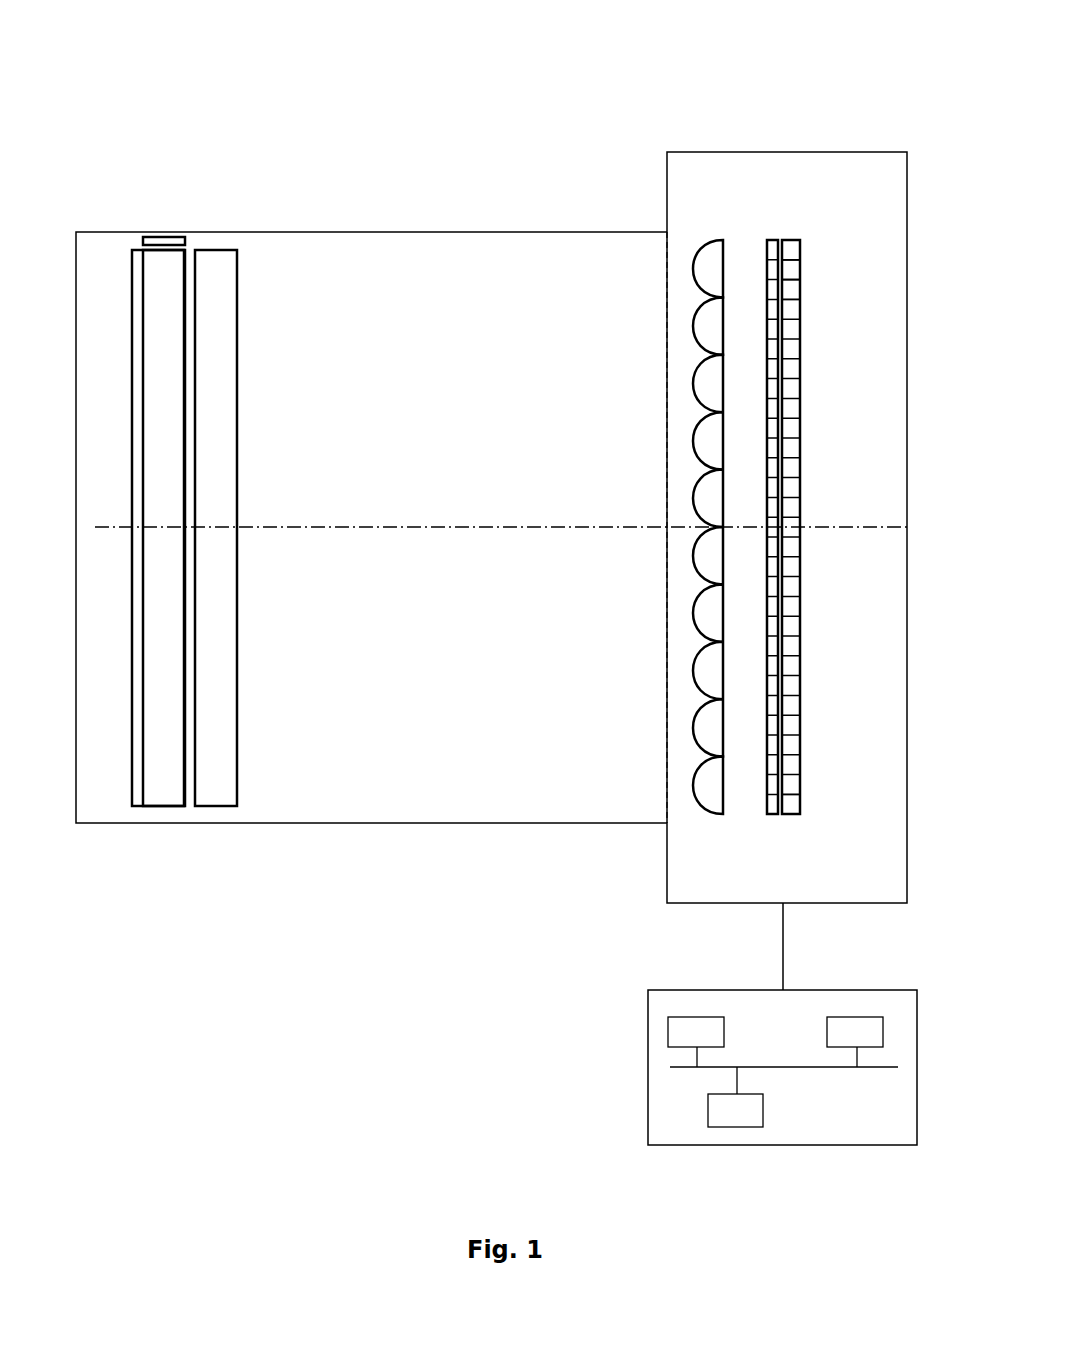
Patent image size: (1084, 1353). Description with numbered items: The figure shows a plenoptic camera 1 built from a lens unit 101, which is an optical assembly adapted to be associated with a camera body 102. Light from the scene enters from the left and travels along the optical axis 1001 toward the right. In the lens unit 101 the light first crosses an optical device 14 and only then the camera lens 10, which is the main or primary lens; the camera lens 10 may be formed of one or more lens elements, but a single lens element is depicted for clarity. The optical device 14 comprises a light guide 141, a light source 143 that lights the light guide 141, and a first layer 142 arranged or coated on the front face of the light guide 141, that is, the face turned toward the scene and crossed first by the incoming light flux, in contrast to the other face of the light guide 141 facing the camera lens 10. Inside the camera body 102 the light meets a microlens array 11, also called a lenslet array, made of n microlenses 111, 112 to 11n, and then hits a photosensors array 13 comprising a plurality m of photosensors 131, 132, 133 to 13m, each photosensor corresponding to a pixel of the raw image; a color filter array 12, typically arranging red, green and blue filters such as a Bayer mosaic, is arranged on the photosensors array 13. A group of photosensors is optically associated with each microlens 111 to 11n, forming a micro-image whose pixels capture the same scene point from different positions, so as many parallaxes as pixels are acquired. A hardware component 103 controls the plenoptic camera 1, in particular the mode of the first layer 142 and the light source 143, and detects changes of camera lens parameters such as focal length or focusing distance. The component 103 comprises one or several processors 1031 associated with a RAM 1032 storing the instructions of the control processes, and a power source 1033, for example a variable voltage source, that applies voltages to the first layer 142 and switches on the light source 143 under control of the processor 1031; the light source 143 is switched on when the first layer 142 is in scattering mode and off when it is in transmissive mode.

The plenoptic camera 1 is at (318, 176).
The camera lens 10 is at (237, 405).
The lens unit 101 is at (397, 823).
The camera body 102 is at (667, 873).
The hardware component 103 is at (712, 1024).
The optical axis 1001 is at (392, 527).
The processor 1031 is at (840, 1025).
The RAM 1032 is at (715, 1116).
The power source 1033 is at (681, 1027).
The microlens array 11 is at (650, 443).
The microlens 111 is at (693, 275).
The microlens 112 is at (693, 330).
The microlens 11n is at (693, 787).
The color filter array 12 is at (770, 236).
The photosensors array 13 is at (848, 449).
The photosensor 131 is at (803, 245).
The photosensor 132 is at (803, 272).
The photosensor 133 is at (803, 290).
The photosensor 13m is at (803, 808).
The optical device 14 is at (164, 542).
The light guide 141 is at (170, 795).
The first layer 142 is at (137, 805).
The light source 143 is at (176, 237).